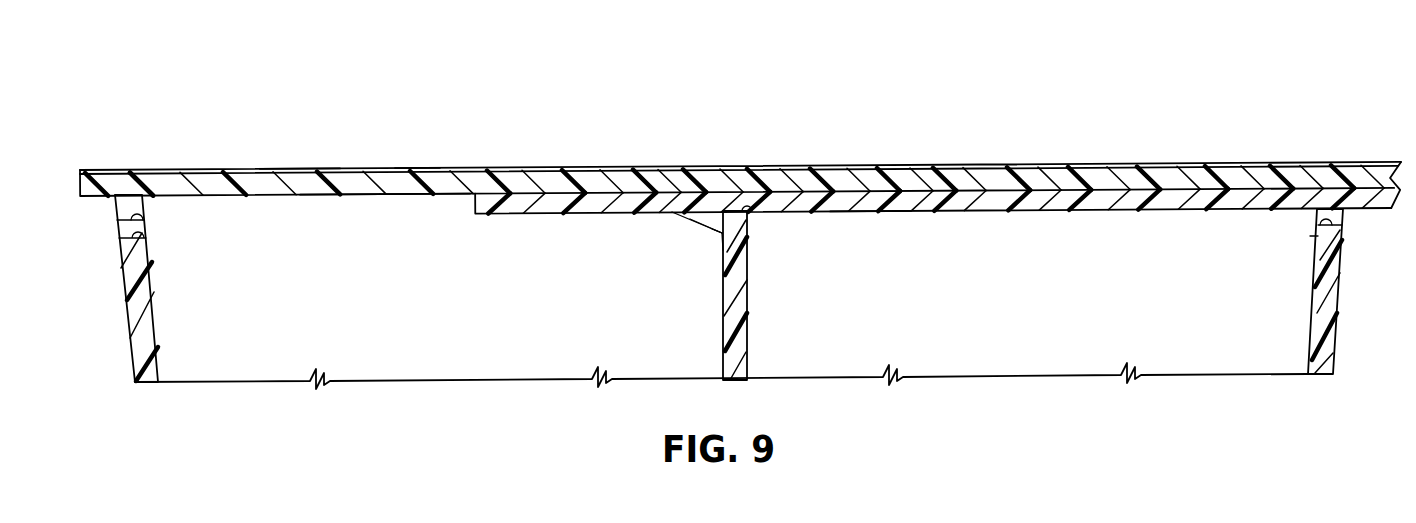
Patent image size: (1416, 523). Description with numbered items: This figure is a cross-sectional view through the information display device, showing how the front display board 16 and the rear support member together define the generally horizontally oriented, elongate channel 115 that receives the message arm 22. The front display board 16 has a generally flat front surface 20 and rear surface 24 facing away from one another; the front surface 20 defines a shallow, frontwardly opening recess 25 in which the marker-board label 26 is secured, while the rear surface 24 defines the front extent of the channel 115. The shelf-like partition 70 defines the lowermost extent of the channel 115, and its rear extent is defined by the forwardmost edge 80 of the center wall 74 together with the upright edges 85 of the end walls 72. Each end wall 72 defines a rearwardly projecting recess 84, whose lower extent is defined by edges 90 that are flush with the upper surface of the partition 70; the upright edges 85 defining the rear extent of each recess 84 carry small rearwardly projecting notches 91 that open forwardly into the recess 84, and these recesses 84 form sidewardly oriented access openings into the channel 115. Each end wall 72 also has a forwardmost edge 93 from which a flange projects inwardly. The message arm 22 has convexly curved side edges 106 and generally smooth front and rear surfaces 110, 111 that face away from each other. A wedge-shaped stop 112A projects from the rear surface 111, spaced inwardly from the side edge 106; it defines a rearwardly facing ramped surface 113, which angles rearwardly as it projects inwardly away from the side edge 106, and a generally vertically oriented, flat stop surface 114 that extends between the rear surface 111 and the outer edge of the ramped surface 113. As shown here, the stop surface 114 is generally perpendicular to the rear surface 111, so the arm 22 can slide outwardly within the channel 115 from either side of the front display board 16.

The front display board 16 is at (1173, 153).
The front surface 20 is at (1057, 163).
The message arm 22 is at (928, 204).
The rear surface 24 is at (350, 196).
The recess 25 is at (412, 172).
The label 26 is at (302, 168).
The partition 70 is at (448, 355).
The end walls 72 is at (147, 337).
The center wall 74 is at (737, 346).
The forwardmost edge 80 is at (750, 210).
The recess 84 is at (150, 210).
The upright edges 85 is at (144, 214).
The edges 90 is at (122, 203).
The notches 91 is at (146, 236).
The forwardmost edge 93 is at (152, 172).
The side edges 106 is at (478, 214).
The front surface 110 is at (845, 180).
The rear surface 111 is at (873, 212).
The stop 112A is at (692, 229).
The ramped surface 113 is at (676, 216).
The stop surface 114 is at (721, 238).
The channel 115 is at (410, 207).